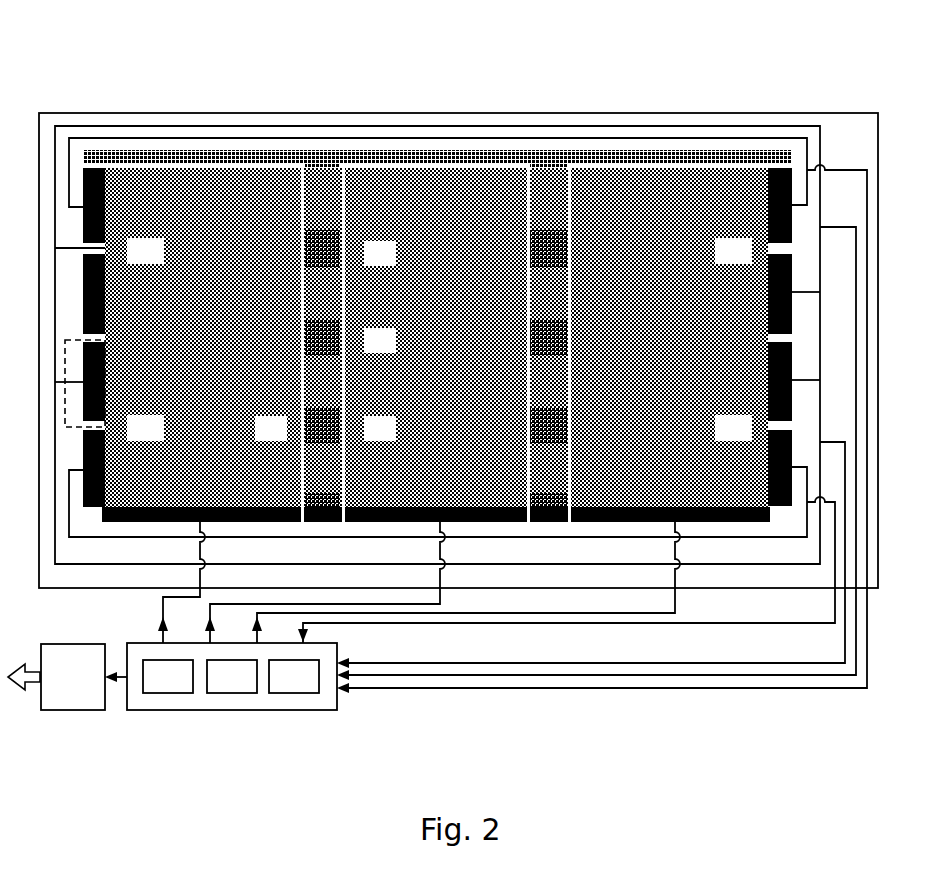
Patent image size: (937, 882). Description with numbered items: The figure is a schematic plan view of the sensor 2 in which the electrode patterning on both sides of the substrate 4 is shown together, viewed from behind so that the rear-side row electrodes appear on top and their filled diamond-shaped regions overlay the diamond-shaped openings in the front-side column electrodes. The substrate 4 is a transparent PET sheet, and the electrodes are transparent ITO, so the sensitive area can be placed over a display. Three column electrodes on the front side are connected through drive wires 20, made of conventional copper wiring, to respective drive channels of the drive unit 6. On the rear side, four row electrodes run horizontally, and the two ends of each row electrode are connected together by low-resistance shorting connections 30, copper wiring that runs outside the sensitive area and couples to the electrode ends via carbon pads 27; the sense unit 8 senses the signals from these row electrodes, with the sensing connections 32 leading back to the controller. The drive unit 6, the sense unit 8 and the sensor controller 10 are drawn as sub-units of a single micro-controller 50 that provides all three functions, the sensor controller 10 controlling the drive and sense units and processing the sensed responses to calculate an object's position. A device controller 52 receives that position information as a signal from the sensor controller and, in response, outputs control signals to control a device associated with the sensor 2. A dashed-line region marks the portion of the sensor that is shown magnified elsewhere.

The sensor 2 is at (432, 82).
The substrate 4 is at (93, 534).
The drive unit 6 is at (176, 690).
The sense unit 8 is at (240, 690).
The sensor controller 10 is at (310, 690).
The drive wires 20 is at (203, 548).
The carbon pads 27 is at (108, 249).
The shorting connections 30 is at (292, 137).
The sense lines 32 is at (452, 623).
The micro-controller 50 is at (232, 703).
The device controller 52 is at (65, 711).